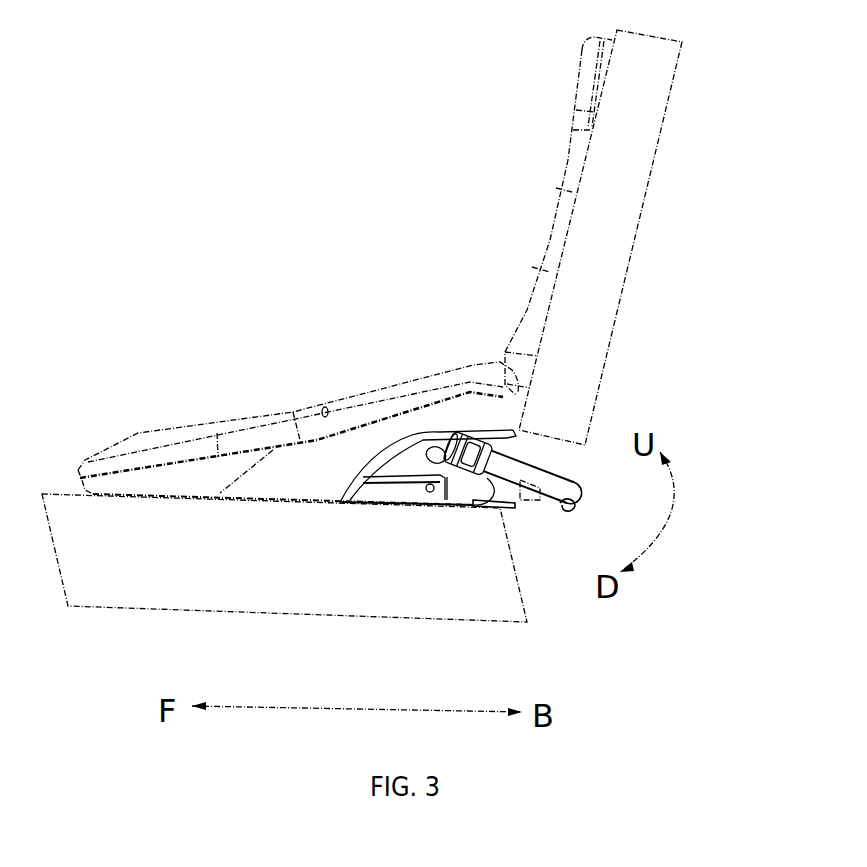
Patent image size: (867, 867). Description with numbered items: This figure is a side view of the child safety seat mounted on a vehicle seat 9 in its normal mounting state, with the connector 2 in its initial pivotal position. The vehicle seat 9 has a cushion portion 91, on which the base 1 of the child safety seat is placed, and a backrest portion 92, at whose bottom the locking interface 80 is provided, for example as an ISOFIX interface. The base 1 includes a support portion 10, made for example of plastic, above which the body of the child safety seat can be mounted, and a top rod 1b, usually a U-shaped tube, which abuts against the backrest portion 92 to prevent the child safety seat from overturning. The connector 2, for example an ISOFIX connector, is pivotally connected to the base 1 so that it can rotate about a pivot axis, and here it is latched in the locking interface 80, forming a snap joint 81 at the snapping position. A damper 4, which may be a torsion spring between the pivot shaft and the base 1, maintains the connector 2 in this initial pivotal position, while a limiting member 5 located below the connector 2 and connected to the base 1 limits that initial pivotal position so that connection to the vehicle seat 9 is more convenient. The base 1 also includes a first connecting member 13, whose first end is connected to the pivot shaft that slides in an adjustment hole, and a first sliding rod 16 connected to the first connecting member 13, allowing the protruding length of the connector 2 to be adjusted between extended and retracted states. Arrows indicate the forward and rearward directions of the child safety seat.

The base 1 is at (227, 301).
The top rod 1b is at (557, 235).
The vehicle seat 9 is at (625, 333).
The backrest portion 92 is at (595, 280).
The cushion portion 91 is at (352, 590).
The support portion 10 is at (285, 435).
The first sliding rod 16 is at (400, 483).
The first connecting member 13 is at (440, 465).
The damper 4 is at (483, 437).
The connector 2 is at (572, 480).
The locking interface 80 is at (533, 503).
The snap joint 81 is at (562, 505).
The limiting member 5 is at (518, 508).